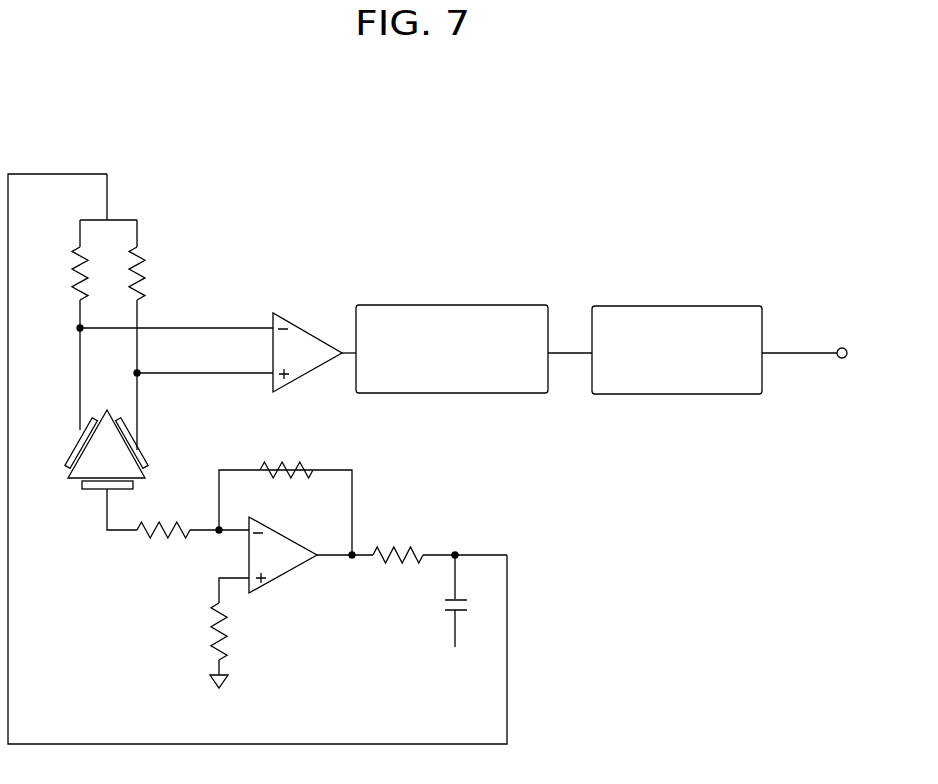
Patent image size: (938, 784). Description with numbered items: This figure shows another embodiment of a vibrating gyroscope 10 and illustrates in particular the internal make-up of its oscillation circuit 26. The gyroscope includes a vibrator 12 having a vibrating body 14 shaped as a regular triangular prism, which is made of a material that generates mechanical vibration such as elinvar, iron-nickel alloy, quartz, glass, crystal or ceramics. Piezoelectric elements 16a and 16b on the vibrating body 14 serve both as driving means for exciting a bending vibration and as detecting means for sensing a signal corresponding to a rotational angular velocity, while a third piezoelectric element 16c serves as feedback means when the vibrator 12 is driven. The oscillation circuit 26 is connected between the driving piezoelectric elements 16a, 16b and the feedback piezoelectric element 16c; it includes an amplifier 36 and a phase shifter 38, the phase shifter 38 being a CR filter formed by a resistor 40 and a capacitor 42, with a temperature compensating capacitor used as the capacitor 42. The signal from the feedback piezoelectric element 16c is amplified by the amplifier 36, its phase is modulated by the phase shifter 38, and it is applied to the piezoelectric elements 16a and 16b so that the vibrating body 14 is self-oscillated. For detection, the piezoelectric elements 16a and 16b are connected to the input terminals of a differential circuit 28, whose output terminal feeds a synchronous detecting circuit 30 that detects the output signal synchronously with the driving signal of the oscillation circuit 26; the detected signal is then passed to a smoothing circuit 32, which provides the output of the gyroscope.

The vibrating gyroscope 10 is at (113, 78).
The vibrator 12 is at (119, 484).
The vibrating body 14 is at (82, 468).
The piezoelectric element 16a is at (78, 446).
The piezoelectric element 16b is at (138, 455).
The piezoelectric element 16c is at (95, 485).
The oscillation circuit 26 is at (307, 560).
The differential circuit 28 is at (302, 330).
The synchronous detecting circuit 30 is at (442, 305).
The smoothing circuit 32 is at (602, 306).
The amplifier 36 is at (277, 560).
The phase shifter 38 is at (437, 590).
The resistor 40 is at (417, 550).
The capacitor 42 is at (462, 613).